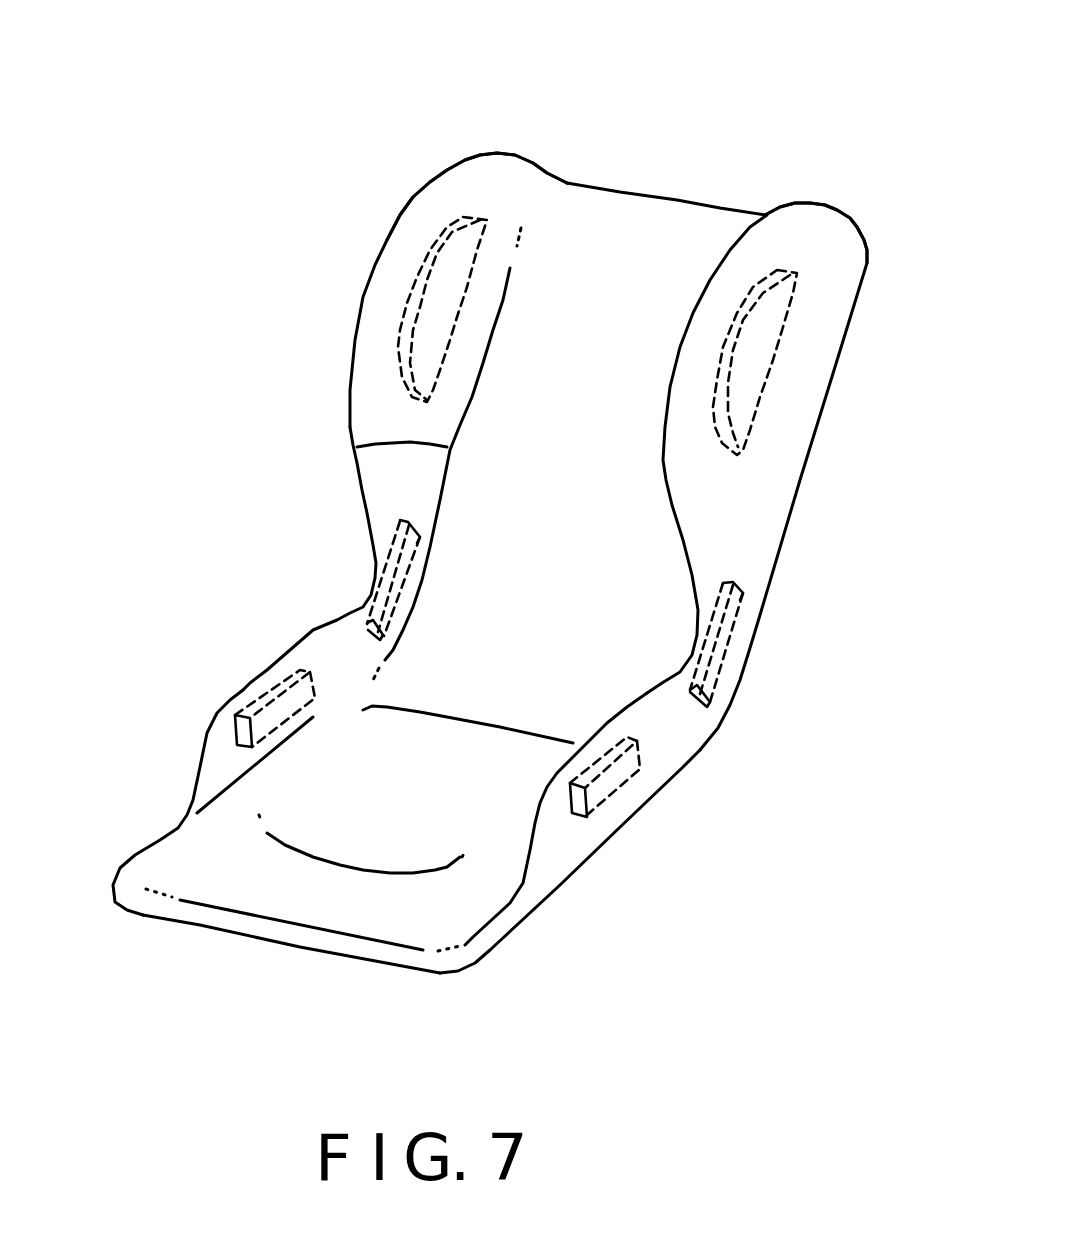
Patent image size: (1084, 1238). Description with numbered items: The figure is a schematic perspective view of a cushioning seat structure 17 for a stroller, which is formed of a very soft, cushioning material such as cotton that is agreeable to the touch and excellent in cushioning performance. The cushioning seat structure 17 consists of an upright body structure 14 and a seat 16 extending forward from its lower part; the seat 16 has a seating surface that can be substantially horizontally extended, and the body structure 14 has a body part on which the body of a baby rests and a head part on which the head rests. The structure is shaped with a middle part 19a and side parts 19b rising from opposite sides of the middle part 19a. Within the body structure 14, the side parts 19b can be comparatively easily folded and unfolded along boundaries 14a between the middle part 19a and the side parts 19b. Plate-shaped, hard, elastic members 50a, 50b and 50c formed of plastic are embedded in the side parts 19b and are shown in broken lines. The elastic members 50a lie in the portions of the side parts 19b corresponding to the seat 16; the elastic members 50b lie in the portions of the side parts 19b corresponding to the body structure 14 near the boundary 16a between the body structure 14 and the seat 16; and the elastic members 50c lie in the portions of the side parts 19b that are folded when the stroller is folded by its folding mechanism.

The body structure 14 is at (850, 415).
The boundaries 14a is at (357, 447).
The seat 16 is at (630, 865).
The boundary 16a is at (470, 723).
The cushioning seat structure 17 is at (255, 960).
The middle part 19a is at (690, 146).
The side parts 19b is at (480, 120).
The elastic members 50a is at (262, 697).
The elastic members 50b is at (387, 562).
The elastic members 50c is at (413, 285).